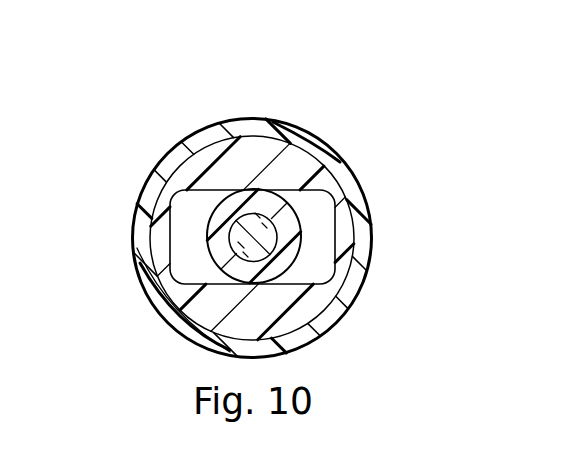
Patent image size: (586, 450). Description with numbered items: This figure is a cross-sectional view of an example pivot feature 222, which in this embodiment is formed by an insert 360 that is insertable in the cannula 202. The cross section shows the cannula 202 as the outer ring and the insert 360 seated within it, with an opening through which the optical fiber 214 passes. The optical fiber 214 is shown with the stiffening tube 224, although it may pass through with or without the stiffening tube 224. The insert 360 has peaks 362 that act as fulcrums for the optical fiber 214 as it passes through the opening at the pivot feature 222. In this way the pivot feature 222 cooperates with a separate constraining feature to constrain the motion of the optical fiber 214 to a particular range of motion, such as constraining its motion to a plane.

The cannula 202 is at (151, 307).
The pivot feature 222 is at (190, 95).
The insert 360 is at (294, 144).
The peaks 362 is at (205, 190).
The stiffening tube 224 is at (207, 226).
The optical fiber 214 is at (300, 218).